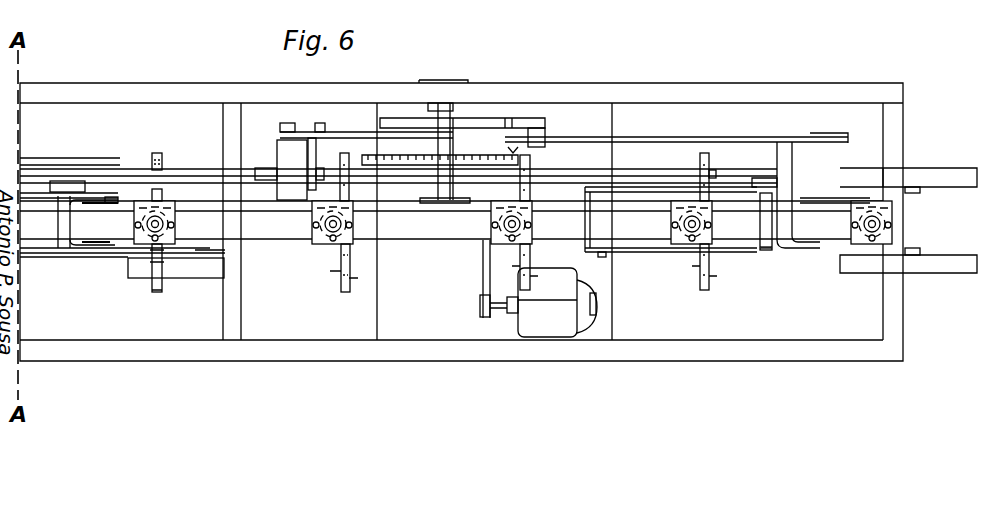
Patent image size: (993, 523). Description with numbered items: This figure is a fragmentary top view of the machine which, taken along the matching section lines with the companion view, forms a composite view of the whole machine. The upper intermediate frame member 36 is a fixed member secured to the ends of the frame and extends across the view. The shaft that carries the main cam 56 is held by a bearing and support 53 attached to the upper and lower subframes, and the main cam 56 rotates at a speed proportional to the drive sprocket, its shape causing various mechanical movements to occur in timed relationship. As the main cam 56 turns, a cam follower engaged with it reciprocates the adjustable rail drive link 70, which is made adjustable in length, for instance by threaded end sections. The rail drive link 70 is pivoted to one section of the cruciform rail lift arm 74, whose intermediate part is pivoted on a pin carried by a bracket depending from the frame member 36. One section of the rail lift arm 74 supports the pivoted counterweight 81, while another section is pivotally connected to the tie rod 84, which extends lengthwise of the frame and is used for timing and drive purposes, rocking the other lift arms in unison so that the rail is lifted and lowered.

The upper intermediate frame member 36 is at (403, 229).
The bearing and support 53 is at (421, 80).
The main cam 56 is at (488, 110).
The adjustable rail drive link 70 is at (707, 138).
The rail lift arm 74 is at (662, 250).
The pivoted counterweight 81 is at (957, 265).
The tie rod 84 is at (645, 180).